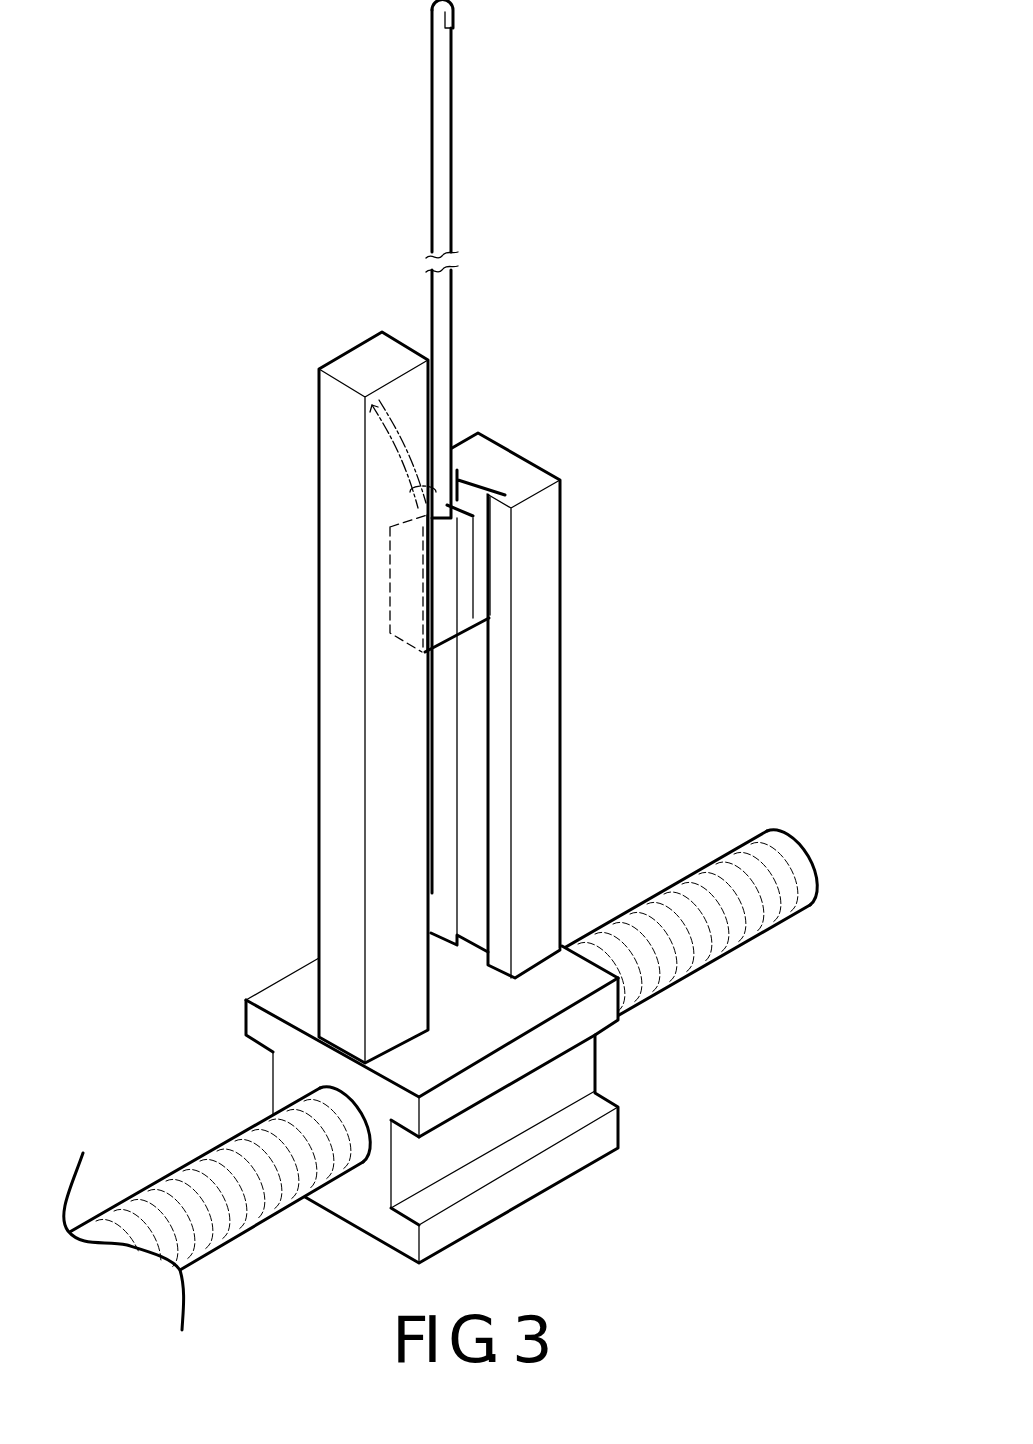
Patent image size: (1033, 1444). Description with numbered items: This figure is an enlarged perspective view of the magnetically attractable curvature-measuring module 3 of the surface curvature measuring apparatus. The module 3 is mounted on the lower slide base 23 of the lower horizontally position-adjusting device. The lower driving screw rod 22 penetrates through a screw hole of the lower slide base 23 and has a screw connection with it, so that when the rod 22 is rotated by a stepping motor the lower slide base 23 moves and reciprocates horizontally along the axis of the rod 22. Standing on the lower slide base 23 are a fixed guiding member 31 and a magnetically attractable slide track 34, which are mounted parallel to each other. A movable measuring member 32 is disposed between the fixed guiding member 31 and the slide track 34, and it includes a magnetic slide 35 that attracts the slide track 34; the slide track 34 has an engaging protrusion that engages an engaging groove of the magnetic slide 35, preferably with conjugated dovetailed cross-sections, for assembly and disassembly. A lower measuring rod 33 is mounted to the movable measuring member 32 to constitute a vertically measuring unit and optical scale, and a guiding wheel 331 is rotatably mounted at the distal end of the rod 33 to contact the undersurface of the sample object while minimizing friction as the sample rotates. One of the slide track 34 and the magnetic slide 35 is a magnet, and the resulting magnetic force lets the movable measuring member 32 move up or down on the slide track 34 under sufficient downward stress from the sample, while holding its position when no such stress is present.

The magnetically attractable curvature-measuring module 3 is at (578, 531).
The fixed guiding member 31 is at (395, 712).
The movable measuring member 32 is at (450, 550).
The lower measuring rod 33 is at (580, 259).
The guiding wheel 331 is at (455, 15).
The magnetically attractable slide track 34 is at (545, 513).
The magnetic slide 35 is at (477, 553).
The lower driving screw rod 22 is at (650, 982).
The lower slide base 23 is at (490, 1122).